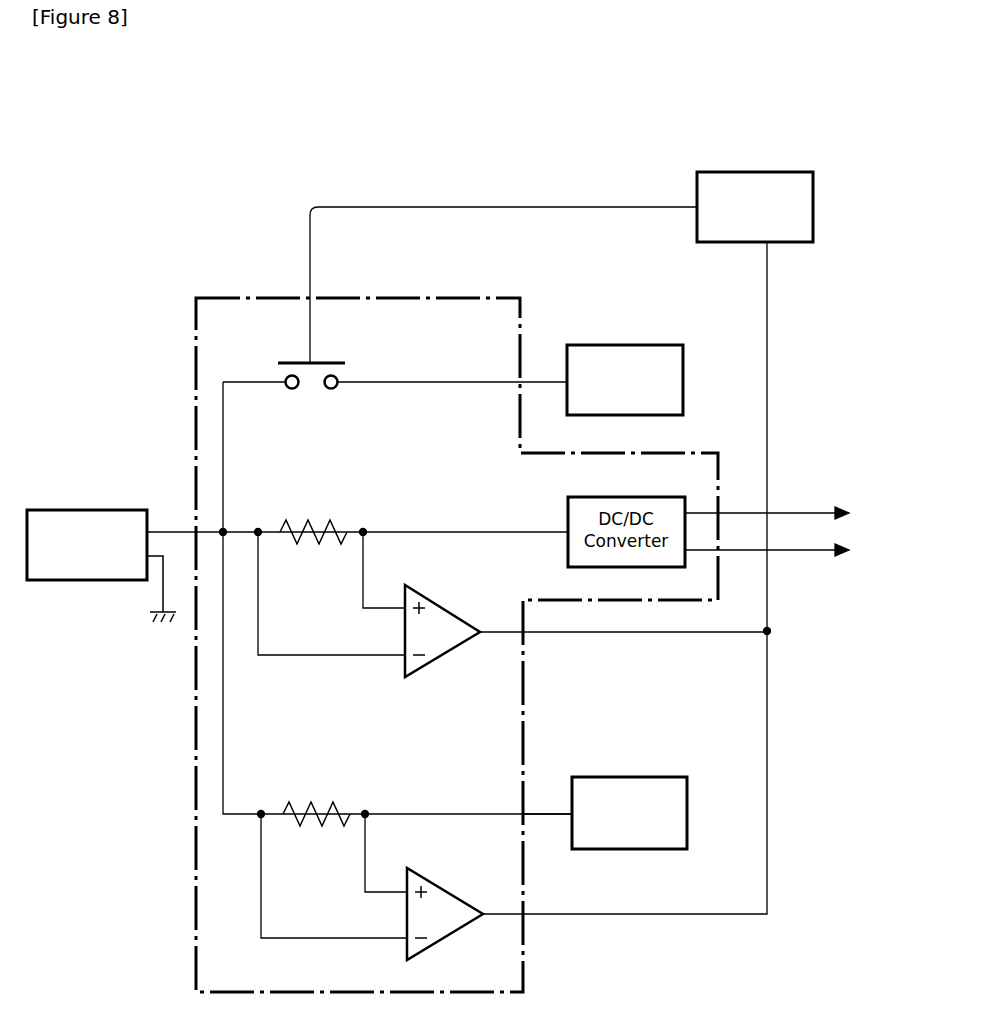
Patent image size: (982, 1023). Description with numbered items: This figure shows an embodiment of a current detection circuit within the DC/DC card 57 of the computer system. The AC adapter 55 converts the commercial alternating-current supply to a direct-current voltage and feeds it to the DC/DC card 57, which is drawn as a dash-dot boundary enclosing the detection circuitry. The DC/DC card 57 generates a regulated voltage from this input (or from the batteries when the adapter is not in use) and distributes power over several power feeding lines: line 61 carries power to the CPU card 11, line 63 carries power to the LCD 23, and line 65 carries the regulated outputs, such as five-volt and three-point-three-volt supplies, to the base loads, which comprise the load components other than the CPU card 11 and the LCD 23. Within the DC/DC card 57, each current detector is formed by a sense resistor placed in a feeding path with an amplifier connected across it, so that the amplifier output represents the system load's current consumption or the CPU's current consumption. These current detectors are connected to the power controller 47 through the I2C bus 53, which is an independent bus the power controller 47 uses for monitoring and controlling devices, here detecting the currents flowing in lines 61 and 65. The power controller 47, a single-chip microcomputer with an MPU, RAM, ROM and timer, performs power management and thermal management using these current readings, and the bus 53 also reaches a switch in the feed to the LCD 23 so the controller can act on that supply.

The CPU card 11 is at (643, 776).
The LCD 23 is at (630, 343).
The power controller 47 is at (757, 170).
The I2C bus 53 is at (557, 202).
The AC adapter 55 is at (107, 508).
The DC/DC card 57 is at (196, 715).
The power feeding line 61 is at (545, 812).
The power feeding line 63 is at (540, 380).
The power feeding line 65 is at (790, 548).